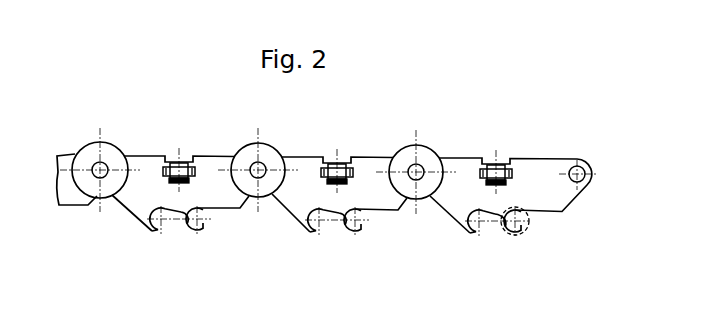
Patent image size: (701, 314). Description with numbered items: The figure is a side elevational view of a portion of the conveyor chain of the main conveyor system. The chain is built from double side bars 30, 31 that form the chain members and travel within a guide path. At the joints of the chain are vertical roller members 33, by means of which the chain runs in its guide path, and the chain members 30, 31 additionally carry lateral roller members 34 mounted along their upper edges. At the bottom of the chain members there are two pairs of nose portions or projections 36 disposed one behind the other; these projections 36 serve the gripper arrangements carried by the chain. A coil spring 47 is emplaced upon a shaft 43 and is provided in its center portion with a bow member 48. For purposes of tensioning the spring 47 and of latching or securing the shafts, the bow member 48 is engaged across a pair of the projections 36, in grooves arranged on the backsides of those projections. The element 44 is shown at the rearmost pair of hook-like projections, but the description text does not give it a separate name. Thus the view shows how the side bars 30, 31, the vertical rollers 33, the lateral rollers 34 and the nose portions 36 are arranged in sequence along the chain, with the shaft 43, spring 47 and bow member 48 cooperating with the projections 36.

The side bar 30 is at (355, 175).
The side bar 31 is at (545, 170).
The vertical roller member 33 is at (427, 157).
The lateral roller member 34 is at (167, 159).
The nose portion 36 is at (157, 233).
The shaft 43 is at (522, 233).
The hook member 44 is at (472, 228).
The coil spring 47 is at (528, 228).
The bow member 48 is at (487, 229).